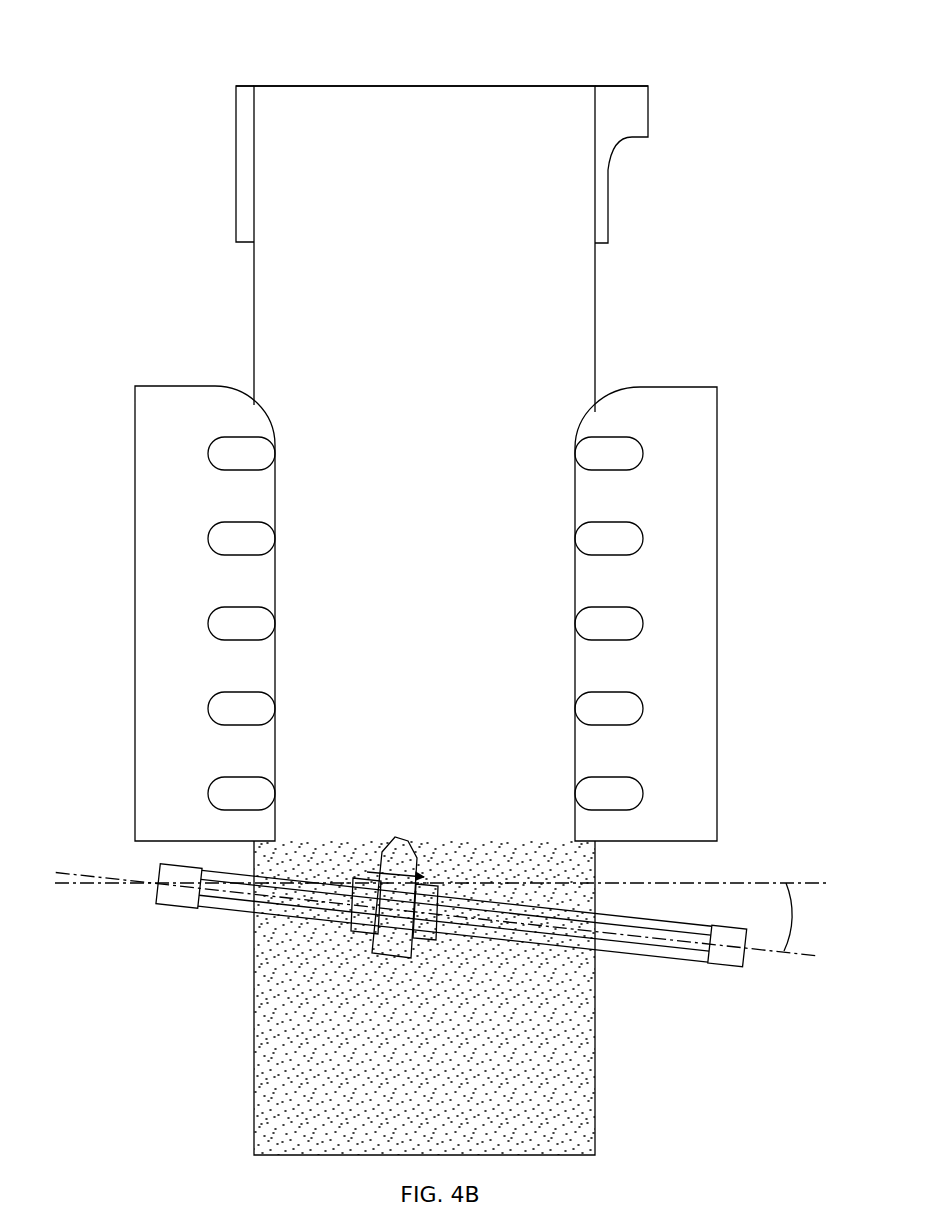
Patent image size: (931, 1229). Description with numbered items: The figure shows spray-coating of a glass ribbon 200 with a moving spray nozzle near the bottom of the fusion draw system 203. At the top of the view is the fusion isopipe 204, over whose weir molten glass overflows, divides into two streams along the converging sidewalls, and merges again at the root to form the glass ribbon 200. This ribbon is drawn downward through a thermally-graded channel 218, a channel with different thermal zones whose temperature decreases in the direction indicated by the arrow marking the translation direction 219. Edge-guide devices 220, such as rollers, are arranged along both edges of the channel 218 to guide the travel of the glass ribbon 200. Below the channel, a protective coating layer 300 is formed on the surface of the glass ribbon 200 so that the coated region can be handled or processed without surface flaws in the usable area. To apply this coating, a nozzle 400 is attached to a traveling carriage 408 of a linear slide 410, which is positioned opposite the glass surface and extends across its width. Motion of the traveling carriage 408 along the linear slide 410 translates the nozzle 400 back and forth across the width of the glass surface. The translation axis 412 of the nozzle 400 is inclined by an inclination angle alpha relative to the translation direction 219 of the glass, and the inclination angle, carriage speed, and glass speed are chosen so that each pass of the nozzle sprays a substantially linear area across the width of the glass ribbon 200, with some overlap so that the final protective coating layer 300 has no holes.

The glass ribbon 200 is at (595, 352).
The fusion draw system 203 is at (310, 82).
The fusion isopipe 204 is at (648, 110).
The thermally-graded channel 218 is at (575, 508).
The translation direction 219 is at (425, 562).
The edge-guide devices 220 is at (214, 437).
The protective coating layer 300 is at (580, 1041).
The nozzle 400 is at (402, 845).
The traveling carriage 408 is at (431, 887).
The linear slide 410 is at (645, 947).
The translation axis 412 is at (763, 950).